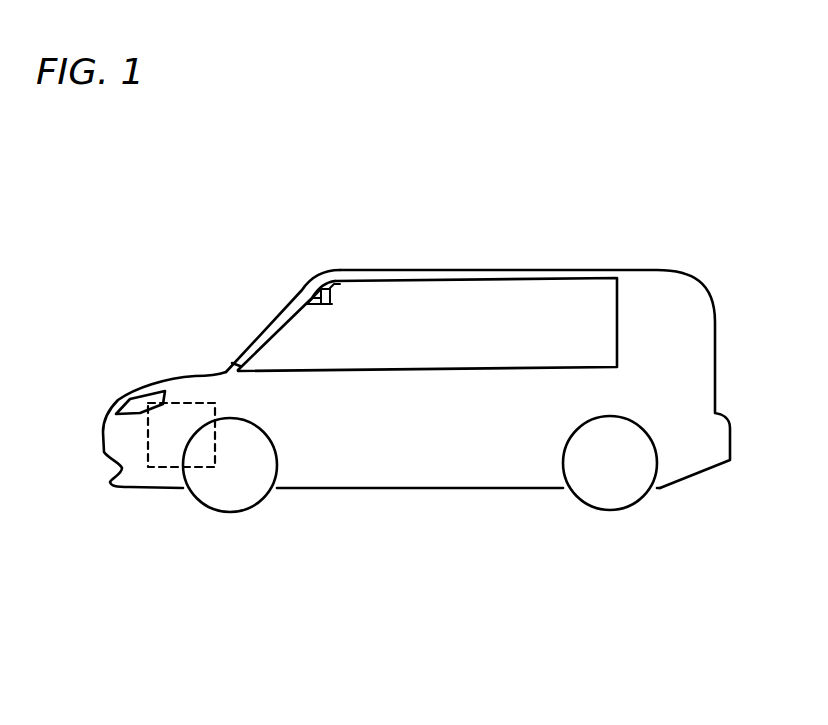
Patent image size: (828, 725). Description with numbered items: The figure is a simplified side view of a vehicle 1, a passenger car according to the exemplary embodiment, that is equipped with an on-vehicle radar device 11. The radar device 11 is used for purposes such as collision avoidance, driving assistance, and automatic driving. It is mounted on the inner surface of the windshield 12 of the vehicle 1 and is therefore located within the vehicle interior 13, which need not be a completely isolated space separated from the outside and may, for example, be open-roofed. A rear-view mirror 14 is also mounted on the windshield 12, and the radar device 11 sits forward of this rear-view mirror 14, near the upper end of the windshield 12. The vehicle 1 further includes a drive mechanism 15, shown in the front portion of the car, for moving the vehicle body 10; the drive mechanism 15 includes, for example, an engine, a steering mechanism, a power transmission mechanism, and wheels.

The vehicle 1 is at (416, 397).
The vehicle body 10 is at (440, 512).
The on-vehicle radar device 11 is at (312, 290).
The windshield 12 is at (285, 307).
The vehicle interior 13 is at (465, 338).
The rear-view mirror 14 is at (330, 300).
The drive mechanism 15 is at (172, 458).